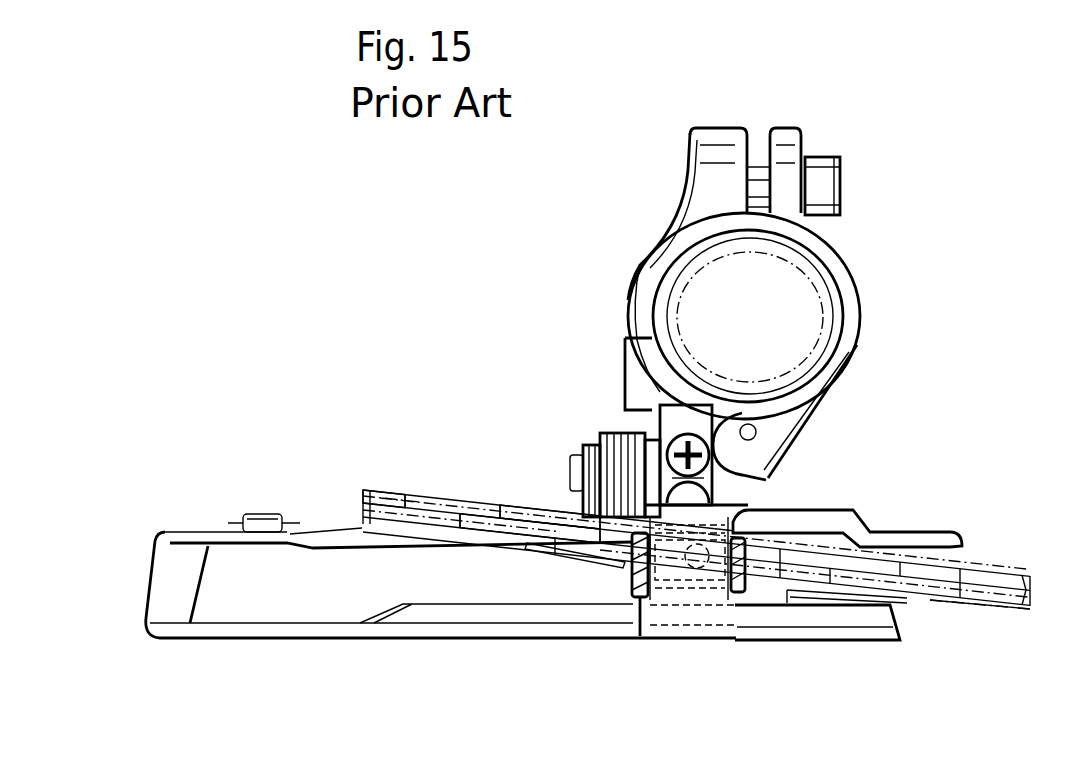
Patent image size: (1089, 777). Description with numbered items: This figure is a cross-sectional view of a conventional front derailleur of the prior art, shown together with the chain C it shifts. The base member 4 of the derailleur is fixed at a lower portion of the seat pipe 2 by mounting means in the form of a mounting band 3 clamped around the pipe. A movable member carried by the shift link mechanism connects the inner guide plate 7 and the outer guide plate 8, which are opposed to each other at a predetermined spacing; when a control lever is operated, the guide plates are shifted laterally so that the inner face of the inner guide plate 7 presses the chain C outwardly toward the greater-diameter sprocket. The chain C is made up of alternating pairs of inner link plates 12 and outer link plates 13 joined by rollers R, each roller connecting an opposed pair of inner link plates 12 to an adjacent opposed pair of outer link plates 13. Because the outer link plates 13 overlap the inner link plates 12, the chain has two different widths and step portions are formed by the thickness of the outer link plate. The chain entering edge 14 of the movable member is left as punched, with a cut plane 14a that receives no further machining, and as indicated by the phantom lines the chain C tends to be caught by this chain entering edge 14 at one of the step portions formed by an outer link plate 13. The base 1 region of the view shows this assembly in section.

The base body 1 is at (461, 673).
The seat pipe 2 is at (800, 262).
The mounting band 3 is at (850, 263).
The base member 4 is at (668, 405).
The inner guide plate 7 is at (802, 506).
The outer guide plate 8 is at (792, 643).
The inner link plates 12 is at (472, 500).
The outer link plates 13 is at (540, 503).
The chain entering edge 14 is at (630, 616).
The cut plane 14a is at (604, 457).
The rollers R is at (517, 503).
The chain C is at (985, 607).